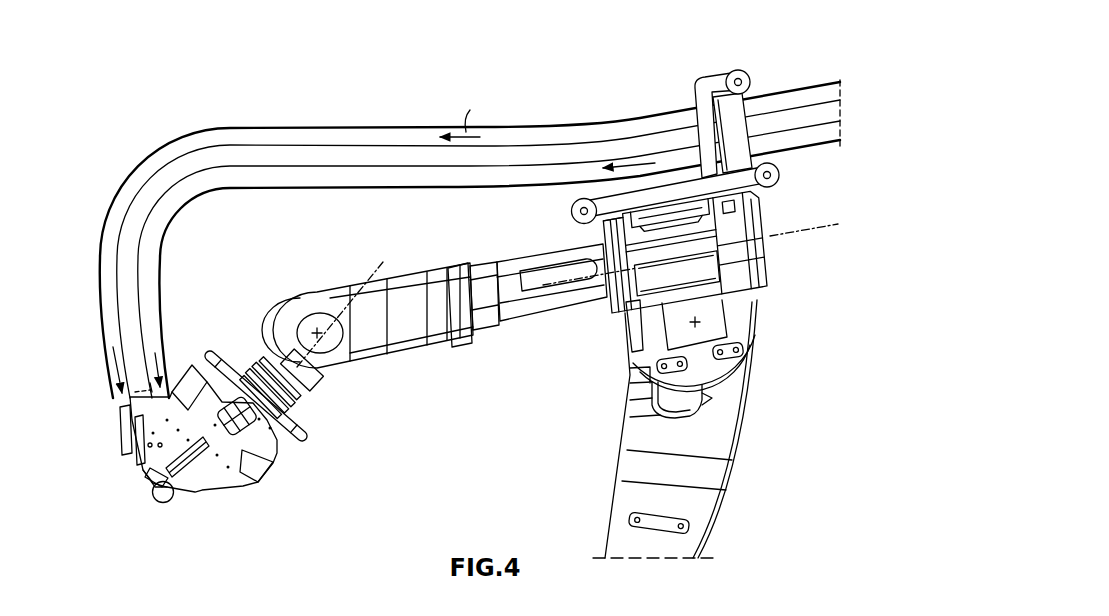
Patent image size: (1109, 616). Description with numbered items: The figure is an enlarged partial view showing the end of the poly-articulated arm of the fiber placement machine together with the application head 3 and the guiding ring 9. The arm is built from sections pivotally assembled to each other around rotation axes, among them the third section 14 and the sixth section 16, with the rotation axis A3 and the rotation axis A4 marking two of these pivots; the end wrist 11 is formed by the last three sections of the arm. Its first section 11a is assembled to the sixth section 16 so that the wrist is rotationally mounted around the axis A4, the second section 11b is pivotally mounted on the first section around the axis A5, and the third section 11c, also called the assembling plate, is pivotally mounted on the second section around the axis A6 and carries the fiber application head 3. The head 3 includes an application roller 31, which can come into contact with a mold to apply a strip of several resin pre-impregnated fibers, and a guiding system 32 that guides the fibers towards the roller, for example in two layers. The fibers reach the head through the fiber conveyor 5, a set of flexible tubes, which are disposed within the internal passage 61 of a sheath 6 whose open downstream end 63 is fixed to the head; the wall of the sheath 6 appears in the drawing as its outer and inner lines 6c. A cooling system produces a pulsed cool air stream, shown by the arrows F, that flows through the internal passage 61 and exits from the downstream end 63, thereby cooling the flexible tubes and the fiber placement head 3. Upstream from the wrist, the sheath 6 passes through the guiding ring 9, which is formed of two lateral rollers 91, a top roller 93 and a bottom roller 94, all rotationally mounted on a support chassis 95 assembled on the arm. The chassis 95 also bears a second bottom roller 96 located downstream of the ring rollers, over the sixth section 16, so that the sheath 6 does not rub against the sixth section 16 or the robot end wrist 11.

The application head 3 is at (137, 467).
The fiber conveyor 5 is at (175, 181).
The sheath 6 is at (345, 125).
The rail flange 6c is at (218, 142).
The guiding ring 9 is at (702, 76).
The end wrist 11 is at (413, 352).
The first section 11a is at (437, 275).
The second section 11b is at (297, 300).
The third section 11c is at (245, 345).
The third section 14 is at (725, 470).
The sixth section 16 is at (540, 312).
The application roller 31 is at (166, 503).
The guiding system 32 is at (155, 433).
The internal passage 61 is at (420, 127).
The open downstream end 63 is at (108, 380).
The lateral rollers 91 is at (742, 125).
The top roller 93 is at (736, 70).
The bottom roller 94 is at (780, 174).
The support chassis 95 is at (692, 105).
The second bottom roller 96 is at (571, 212).
The rotation axis A3 is at (700, 323).
The rotation axis A4 is at (820, 223).
The axis A5 is at (351, 300).
The axis A6 is at (333, 352).
The arrows F is at (470, 106).